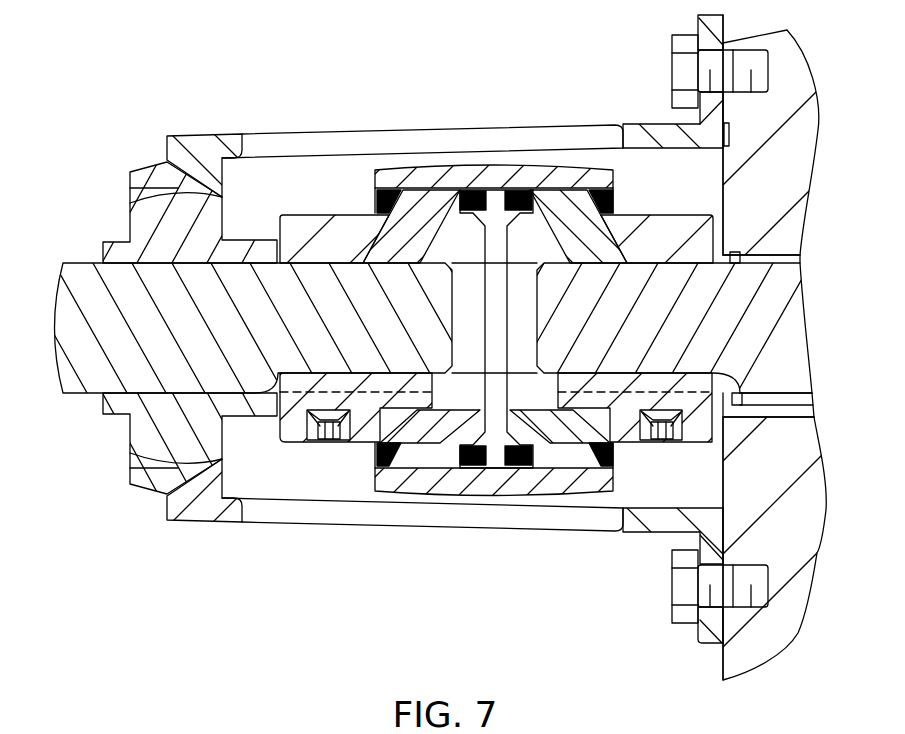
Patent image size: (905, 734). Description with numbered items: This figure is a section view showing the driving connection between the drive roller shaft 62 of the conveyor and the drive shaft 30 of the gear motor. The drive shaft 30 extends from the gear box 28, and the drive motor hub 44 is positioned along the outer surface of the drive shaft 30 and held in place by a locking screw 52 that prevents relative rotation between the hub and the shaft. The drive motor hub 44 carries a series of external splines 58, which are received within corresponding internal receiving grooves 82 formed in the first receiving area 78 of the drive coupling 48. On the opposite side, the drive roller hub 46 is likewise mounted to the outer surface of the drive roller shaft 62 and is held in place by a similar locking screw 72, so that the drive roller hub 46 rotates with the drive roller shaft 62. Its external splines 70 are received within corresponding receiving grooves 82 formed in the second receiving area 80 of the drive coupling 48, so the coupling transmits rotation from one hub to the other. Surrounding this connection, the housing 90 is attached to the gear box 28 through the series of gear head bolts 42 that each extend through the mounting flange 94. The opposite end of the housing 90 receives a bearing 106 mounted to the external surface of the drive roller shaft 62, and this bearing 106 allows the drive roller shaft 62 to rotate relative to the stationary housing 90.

The gear box 28 is at (788, 70).
The drive shaft 30 is at (792, 342).
The gear head bolts 42 is at (670, 72).
The drive motor hub 44 is at (655, 233).
The drive roller hub 46 is at (340, 240).
The drive coupling 48 is at (495, 482).
The locking screw 52 is at (680, 441).
The external splines 58 is at (580, 205).
The drive roller shaft 62 is at (92, 355).
The splines 70 is at (437, 210).
The locking screw 72 is at (304, 441).
The first receiving area 78 is at (595, 465).
The second receiving area 80 is at (400, 465).
The internal receiving grooves 82 is at (472, 178).
The housing 90 is at (190, 507).
The mounting flange 94 is at (708, 640).
The bearing 106 is at (150, 228).